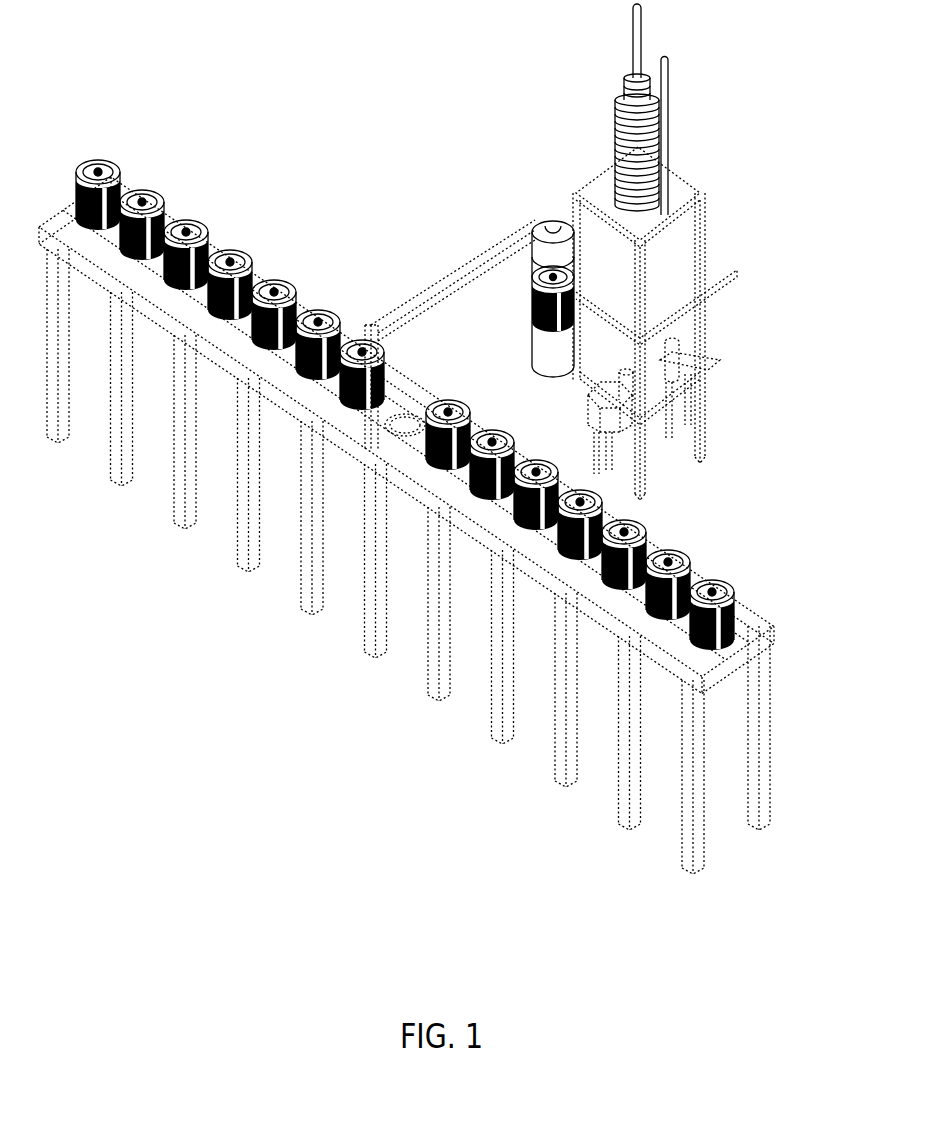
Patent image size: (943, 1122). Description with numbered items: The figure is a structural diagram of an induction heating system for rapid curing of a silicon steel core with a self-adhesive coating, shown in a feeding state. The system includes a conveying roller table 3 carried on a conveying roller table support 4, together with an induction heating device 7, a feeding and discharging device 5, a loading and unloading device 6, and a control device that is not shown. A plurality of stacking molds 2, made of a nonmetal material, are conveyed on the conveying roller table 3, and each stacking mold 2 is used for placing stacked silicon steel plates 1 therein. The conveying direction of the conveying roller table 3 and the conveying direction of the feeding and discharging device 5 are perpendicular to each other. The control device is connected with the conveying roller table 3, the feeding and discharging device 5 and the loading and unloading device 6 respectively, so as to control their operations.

The stacked silicon steel plates 1 is at (676, 540).
The stacking mold 2 is at (692, 572).
The conveying roller table 3 is at (750, 617).
The conveying roller table support 4 is at (618, 667).
The feeding and discharging device 5 is at (529, 238).
The loading and unloading device 6 is at (708, 338).
The induction heating device 7 is at (664, 190).